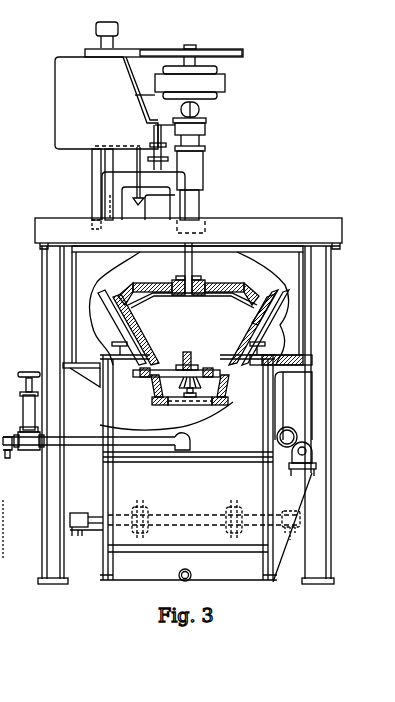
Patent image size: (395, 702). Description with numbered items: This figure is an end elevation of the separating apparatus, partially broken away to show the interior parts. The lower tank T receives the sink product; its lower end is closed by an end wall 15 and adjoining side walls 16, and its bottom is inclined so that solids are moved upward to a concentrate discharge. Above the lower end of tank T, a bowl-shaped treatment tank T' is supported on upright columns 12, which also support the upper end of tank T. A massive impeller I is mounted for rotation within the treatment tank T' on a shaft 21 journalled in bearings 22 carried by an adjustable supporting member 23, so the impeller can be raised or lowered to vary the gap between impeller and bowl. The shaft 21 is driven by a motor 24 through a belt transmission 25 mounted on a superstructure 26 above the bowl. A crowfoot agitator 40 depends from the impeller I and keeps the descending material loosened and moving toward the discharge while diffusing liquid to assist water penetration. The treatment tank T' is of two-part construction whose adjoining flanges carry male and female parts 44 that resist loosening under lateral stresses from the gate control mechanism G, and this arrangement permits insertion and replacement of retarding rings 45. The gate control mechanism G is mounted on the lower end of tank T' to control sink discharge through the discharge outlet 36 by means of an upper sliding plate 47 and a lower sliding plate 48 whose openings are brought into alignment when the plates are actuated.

The belt transmission 25 is at (243, 53).
The motor 24 is at (225, 83).
The bearings 22 is at (206, 132).
The adjustable supporting member 23 is at (170, 195).
The superstructure 26 is at (188, 233).
The shaft 21 is at (197, 263).
The columns 12 is at (328, 543).
The treatment tank T' is at (212, 316).
The impeller I is at (193, 336).
The male and female parts 44 is at (238, 393).
The retarding rings 45 is at (165, 370).
The crowfoot agitator 40 is at (178, 383).
The discharge outlet 36 is at (178, 405).
The lower sliding plate 48 is at (156, 404).
The upper sliding plate 47 is at (223, 400).
The gate control mechanism G is at (213, 405).
The tank T is at (188, 467).
The end wall 15 is at (201, 496).
The side walls 16 is at (113, 558).